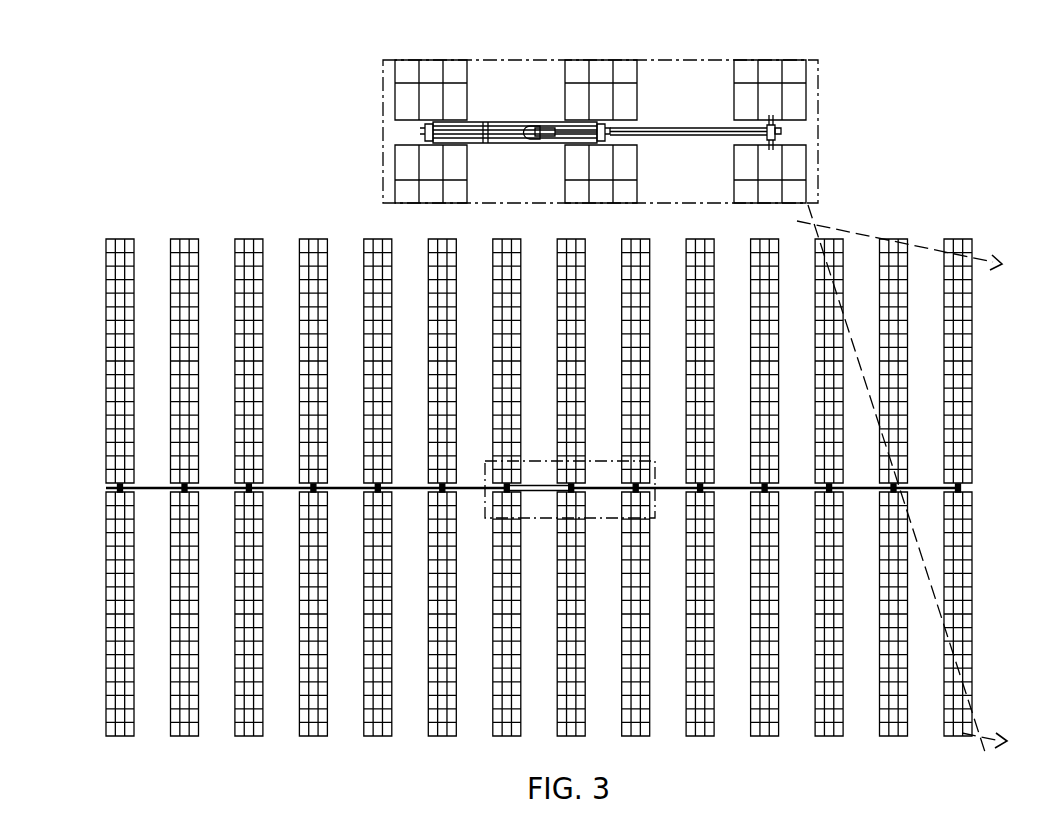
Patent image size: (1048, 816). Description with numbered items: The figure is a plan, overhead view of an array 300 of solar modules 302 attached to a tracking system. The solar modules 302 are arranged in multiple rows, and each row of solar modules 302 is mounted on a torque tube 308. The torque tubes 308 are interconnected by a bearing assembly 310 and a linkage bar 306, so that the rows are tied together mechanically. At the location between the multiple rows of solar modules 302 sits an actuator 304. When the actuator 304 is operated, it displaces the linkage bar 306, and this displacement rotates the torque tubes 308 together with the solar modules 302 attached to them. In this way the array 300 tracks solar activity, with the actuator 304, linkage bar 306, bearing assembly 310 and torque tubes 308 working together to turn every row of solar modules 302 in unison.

The array 300 is at (215, 124).
The solar modules 302 is at (314, 243).
The actuator 304 is at (514, 112).
The linkage bar 306 is at (683, 132).
The torque tube 308 is at (772, 125).
The bearing assembly 310 is at (786, 131).